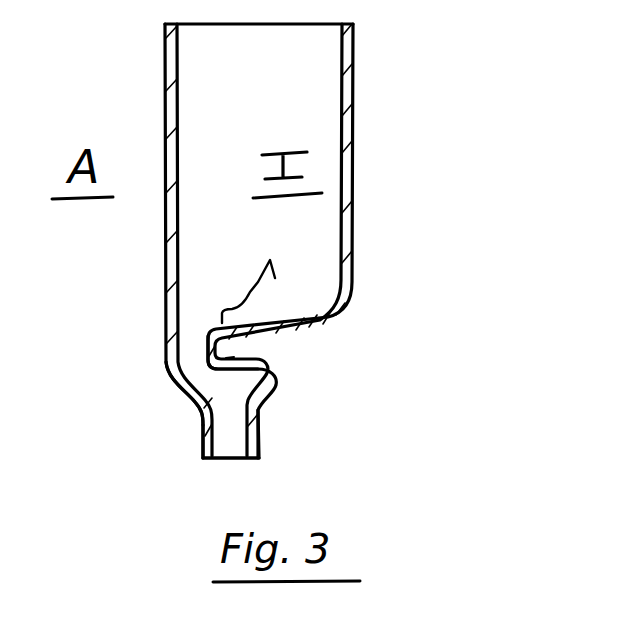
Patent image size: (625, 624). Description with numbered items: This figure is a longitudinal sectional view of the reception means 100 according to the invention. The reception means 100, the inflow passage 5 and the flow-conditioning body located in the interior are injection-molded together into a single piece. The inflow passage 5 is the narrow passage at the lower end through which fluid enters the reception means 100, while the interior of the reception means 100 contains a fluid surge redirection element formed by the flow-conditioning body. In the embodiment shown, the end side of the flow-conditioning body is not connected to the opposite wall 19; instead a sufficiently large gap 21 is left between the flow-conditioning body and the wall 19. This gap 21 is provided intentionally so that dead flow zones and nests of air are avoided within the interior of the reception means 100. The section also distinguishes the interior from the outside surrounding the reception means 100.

The reception means 100 is at (418, 151).
The gap 21 is at (193, 347).
The wall 19 is at (167, 370).
The inflow passage 5 is at (259, 430).